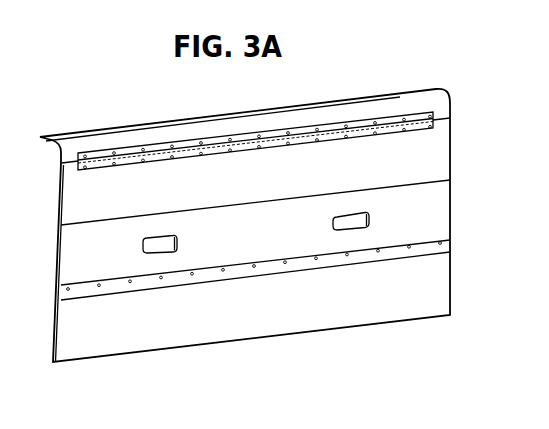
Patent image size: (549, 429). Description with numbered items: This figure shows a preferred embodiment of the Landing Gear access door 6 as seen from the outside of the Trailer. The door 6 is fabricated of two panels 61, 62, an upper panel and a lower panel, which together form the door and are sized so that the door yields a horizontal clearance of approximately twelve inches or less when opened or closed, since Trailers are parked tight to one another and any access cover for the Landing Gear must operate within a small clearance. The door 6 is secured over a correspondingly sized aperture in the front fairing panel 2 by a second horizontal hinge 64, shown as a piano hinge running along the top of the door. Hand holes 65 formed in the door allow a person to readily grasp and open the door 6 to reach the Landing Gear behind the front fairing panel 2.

The front fairing panel 2 is at (395, 102).
The Landing Gear access door 6 is at (263, 190).
The panel 61 is at (422, 147).
The panel 62 is at (422, 220).
The second horizontal hinge 64 is at (155, 145).
The hand holes 65 is at (152, 243).